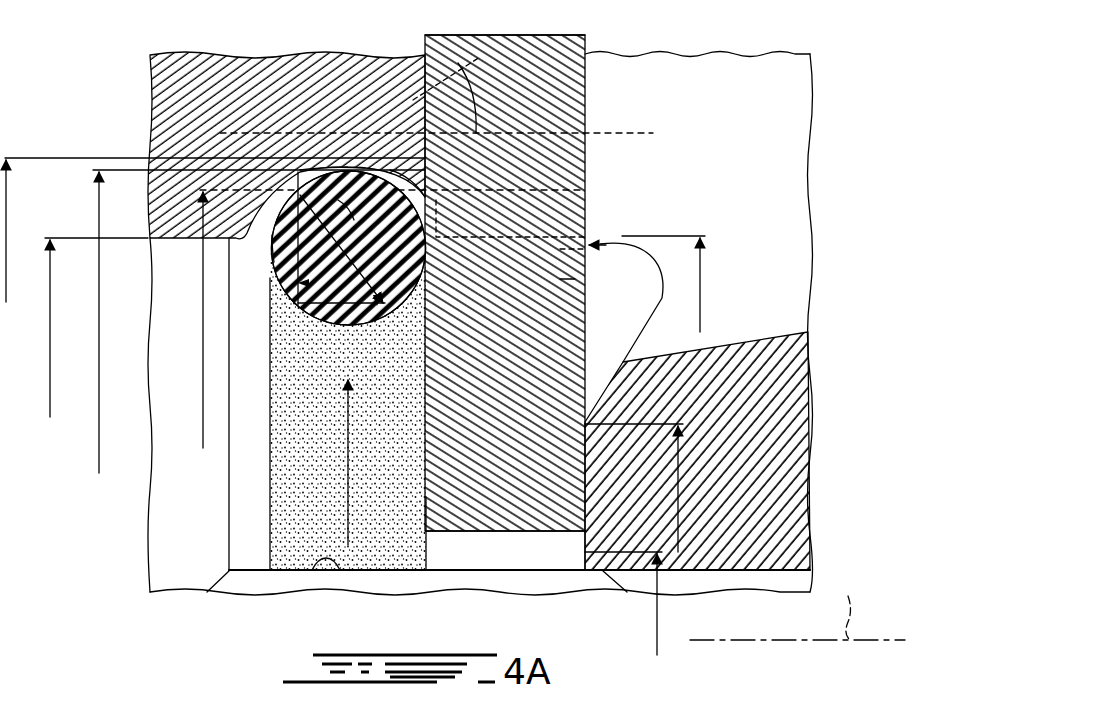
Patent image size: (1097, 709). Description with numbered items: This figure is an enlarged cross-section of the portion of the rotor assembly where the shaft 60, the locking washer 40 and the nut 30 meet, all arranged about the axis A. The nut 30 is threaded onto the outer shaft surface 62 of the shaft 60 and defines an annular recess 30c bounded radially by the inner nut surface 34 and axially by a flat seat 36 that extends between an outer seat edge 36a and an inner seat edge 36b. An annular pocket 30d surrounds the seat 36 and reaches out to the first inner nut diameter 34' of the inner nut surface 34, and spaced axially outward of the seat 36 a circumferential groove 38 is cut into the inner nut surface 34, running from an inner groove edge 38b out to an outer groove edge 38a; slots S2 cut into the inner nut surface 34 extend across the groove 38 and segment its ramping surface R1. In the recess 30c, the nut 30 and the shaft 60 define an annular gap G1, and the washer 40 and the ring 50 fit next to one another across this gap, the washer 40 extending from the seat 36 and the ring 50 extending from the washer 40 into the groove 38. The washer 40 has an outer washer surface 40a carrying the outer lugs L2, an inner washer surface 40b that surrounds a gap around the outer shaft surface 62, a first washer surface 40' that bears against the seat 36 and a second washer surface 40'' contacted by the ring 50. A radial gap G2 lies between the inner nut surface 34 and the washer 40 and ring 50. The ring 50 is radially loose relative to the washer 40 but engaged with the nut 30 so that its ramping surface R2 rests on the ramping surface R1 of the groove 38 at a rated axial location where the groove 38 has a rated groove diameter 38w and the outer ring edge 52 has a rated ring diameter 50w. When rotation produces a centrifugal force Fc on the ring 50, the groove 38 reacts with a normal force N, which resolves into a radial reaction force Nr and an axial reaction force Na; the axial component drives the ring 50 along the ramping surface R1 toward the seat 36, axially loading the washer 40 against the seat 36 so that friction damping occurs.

The nut 30 is at (782, 94).
The annular recess 30c is at (166, 412).
The annular pocket 30d is at (604, 372).
The inner nut surface 34 is at (434, 261).
The first inner nut diameter 34' is at (723, 285).
The seat 36 is at (585, 476).
The outer seat edge 36a is at (657, 488).
The inner seat edge 36b is at (683, 616).
The circumferential groove 38 is at (427, 177).
The outer groove edge 38a is at (215, 232).
The inner groove edge 38b is at (96, 329).
The rated groove diameter 38w is at (185, 323).
The locking washer 40 is at (712, 451).
The first washer surface 40' is at (596, 564).
The second washer surface 40'' is at (398, 569).
The outer washer surface 40a is at (575, 279).
The inner washer surface 40b is at (473, 531).
The ring 50 is at (290, 538).
The rated ring diameter 50w is at (259, 322).
The outer ring edge 52 is at (347, 166).
The shaft 60 is at (245, 583).
The outer shaft surface 62 is at (313, 571).
The slots S2 is at (176, 90).
The outer lugs L2 is at (586, 44).
The annular gap G1 is at (640, 248).
The radial gap G2 is at (372, 160).
The ramping surface of the groove R1 is at (270, 240).
The ramping surface of the ring R2 is at (343, 167).
The normal force N is at (341, 238).
The radial reaction force Nr is at (276, 272).
The axial reaction force Na is at (290, 314).
The centrifugal force Fc is at (320, 448).
The axis A is at (797, 601).